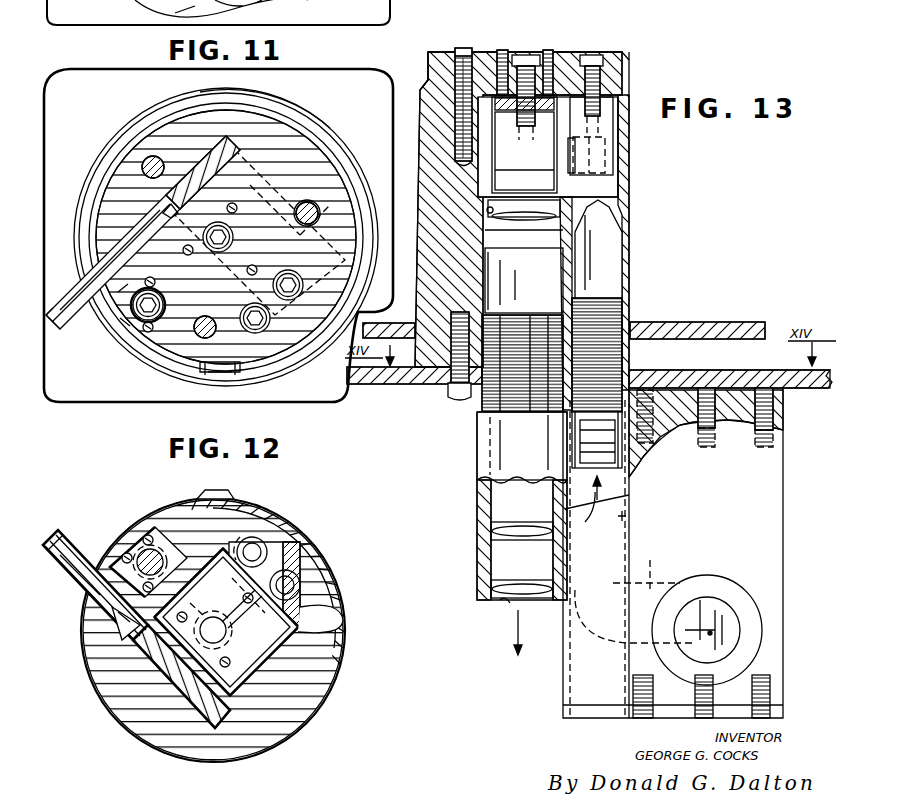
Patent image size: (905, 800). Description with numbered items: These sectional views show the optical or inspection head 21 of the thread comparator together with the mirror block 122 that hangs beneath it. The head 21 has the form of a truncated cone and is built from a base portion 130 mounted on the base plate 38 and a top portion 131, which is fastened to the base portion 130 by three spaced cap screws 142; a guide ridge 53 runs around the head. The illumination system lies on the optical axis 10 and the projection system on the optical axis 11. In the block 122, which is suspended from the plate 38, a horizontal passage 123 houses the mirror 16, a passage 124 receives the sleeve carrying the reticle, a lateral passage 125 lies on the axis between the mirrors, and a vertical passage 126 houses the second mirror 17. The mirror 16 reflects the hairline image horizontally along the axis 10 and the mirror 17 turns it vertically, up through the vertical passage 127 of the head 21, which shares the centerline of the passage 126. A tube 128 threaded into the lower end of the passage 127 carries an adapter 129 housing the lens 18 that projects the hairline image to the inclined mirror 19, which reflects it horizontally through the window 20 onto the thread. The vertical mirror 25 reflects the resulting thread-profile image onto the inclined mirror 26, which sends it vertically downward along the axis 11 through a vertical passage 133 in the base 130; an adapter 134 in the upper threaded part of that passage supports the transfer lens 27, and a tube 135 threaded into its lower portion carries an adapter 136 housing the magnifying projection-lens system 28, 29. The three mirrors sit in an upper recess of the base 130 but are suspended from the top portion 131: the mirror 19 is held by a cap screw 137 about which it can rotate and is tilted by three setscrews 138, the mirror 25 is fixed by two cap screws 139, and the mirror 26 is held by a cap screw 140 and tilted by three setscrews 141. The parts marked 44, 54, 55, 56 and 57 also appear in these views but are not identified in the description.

In FIG. 12, the optical axis 10 is at (178, 523).
In FIG. 13, the optical axis 10 is at (585, 515).
In FIG. 12, the optical axis 11 is at (255, 525).
In FIG. 13, the optical axis 11 is at (521, 628).
In FIG. 13, the mirror 16 is at (712, 592).
In FIG. 13, the second mirror 17 is at (600, 612).
In FIG. 13, the lens 18 is at (608, 488).
In FIG. 11, the inclined mirror 19 is at (130, 312).
In FIG. 12, the inclined mirror 19 is at (140, 537).
In FIG. 13, the inclined mirror 19 is at (610, 176).
In FIG. 11, the window 20 is at (205, 383).
In FIG. 13, the window 20 is at (605, 160).
In FIG. 11, the optical head 21 is at (118, 154).
In FIG. 12, the optical head 21 is at (320, 710).
In FIG. 11, the vertical mirror 25 is at (298, 363).
In FIG. 12, the vertical mirror 25 is at (278, 548).
In FIG. 11, the inclined mirror 26 is at (274, 206).
In FIG. 12, the inclined mirror 26 is at (257, 640).
In FIG. 13, the inclined mirror 26 is at (512, 182).
In FIG. 13, the transfer lens 27 is at (524, 271).
In FIG. 13, the magnifying projection-lens system 28 is at (532, 540).
In FIG. 13, the magnifying projection-lens system 29 is at (500, 605).
In FIG. 11, the base plate 38 is at (343, 78).
In FIG. 13, the base plate 38 is at (782, 372).
In FIG. 11, the plate 44 is at (98, 115).
In FIG. 13, the plate 44 is at (705, 323).
In FIG. 11, the guide ridge 53 is at (222, 407).
In FIG. 12, the guide ridge 53 is at (212, 491).
In FIG. 11, the arm 54 is at (52, 303).
In FIG. 12, the arm 54 is at (67, 572).
In FIG. 12, the arm end 55 is at (57, 542).
In FIG. 11, the pivot piece 56 is at (178, 177).
In FIG. 12, the pivot piece 56 is at (130, 640).
In FIG. 11, the bar 57 is at (198, 165).
In FIG. 12, the bar 57 is at (170, 682).
In FIG. 13, the block 122 is at (560, 683).
In FIG. 13, the horizontal passage 123 is at (735, 625).
In FIG. 13, the passage 124 is at (760, 607).
In FIG. 13, the lateral passage 125 is at (659, 567).
In FIG. 13, the vertical passage 126 is at (624, 516).
In FIG. 13, the vertical passage 127 is at (612, 255).
In FIG. 13, the tube 128 is at (612, 306).
In FIG. 13, the adapter 129 is at (603, 447).
In FIG. 13, the base portion 130 is at (463, 249).
In FIG. 11, the top portion 131 is at (270, 128).
In FIG. 13, the top portion 131 is at (622, 72).
In FIG. 11, the vertical passage 133 is at (325, 195).
In FIG. 13, the vertical passage 133 is at (545, 302).
In FIG. 13, the adapter 134 is at (488, 210).
In FIG. 13, the tube 135 is at (477, 446).
In FIG. 13, the adapter 136 is at (477, 547).
In FIG. 11, the cap screw 137 is at (132, 322).
In FIG. 12, the cap screw 137 is at (167, 560).
In FIG. 13, the cap screw 137 is at (597, 55).
In FIG. 11, the setscrews 138 is at (183, 248).
In FIG. 12, the setscrews 138 is at (115, 548).
In FIG. 11, the cap screws 139 is at (303, 280).
In FIG. 11, the cap screw 140 is at (232, 272).
In FIG. 12, the cap screw 140 is at (203, 615).
In FIG. 13, the cap screw 140 is at (530, 55).
In FIG. 11, the setscrews 141 is at (256, 265).
In FIG. 12, the setscrews 141 is at (247, 597).
In FIG. 13, the setscrews 141 is at (502, 50).
In FIG. 11, the cap screws 142 is at (318, 208).
In FIG. 13, the cap screws 142 is at (462, 48).